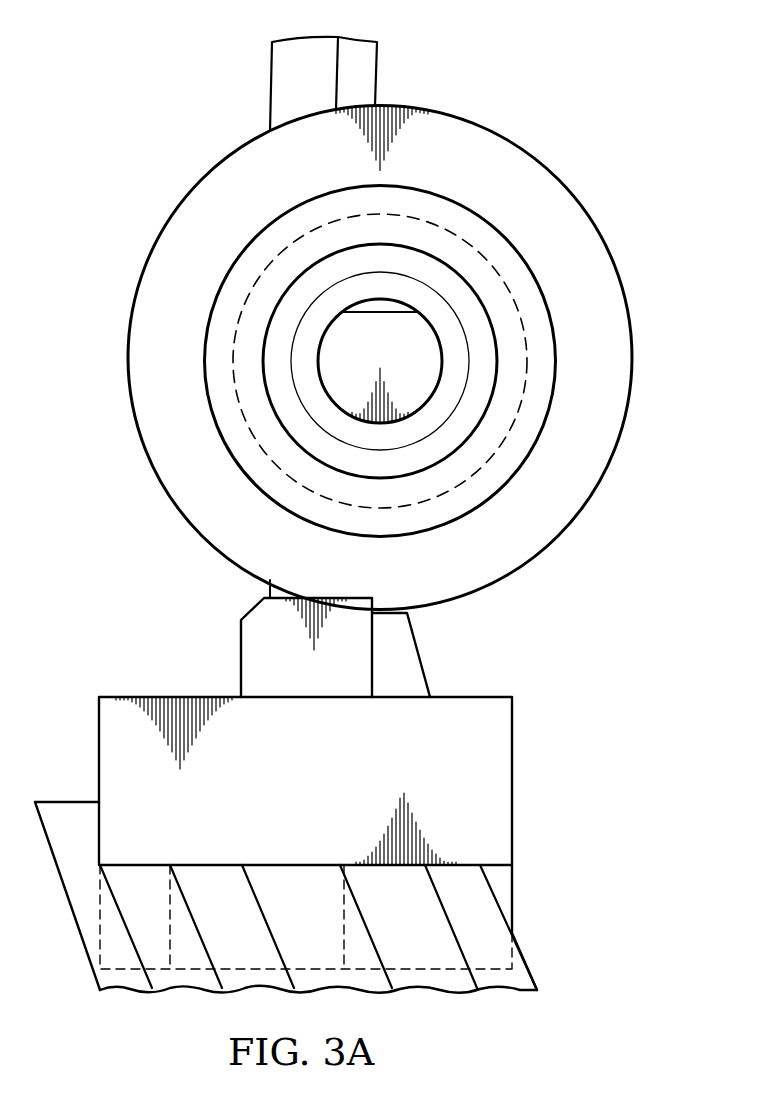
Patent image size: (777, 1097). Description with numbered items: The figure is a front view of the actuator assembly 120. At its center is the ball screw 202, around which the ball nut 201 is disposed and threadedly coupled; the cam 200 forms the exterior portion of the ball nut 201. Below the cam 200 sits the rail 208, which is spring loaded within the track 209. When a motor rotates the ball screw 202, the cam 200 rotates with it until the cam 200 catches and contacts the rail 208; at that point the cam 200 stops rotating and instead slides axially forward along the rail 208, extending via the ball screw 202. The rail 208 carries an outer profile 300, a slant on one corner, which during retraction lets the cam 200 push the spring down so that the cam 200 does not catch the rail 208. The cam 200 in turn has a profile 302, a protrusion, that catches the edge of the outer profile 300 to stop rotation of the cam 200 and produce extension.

The actuator assembly 120 is at (156, 74).
The cam 200 is at (635, 361).
The ball nut 201 is at (423, 213).
The ball screw 202 is at (348, 262).
The rail 208 is at (250, 658).
The track 209 is at (513, 781).
The outer profile 300 is at (327, 638).
The profile 302 is at (410, 657).